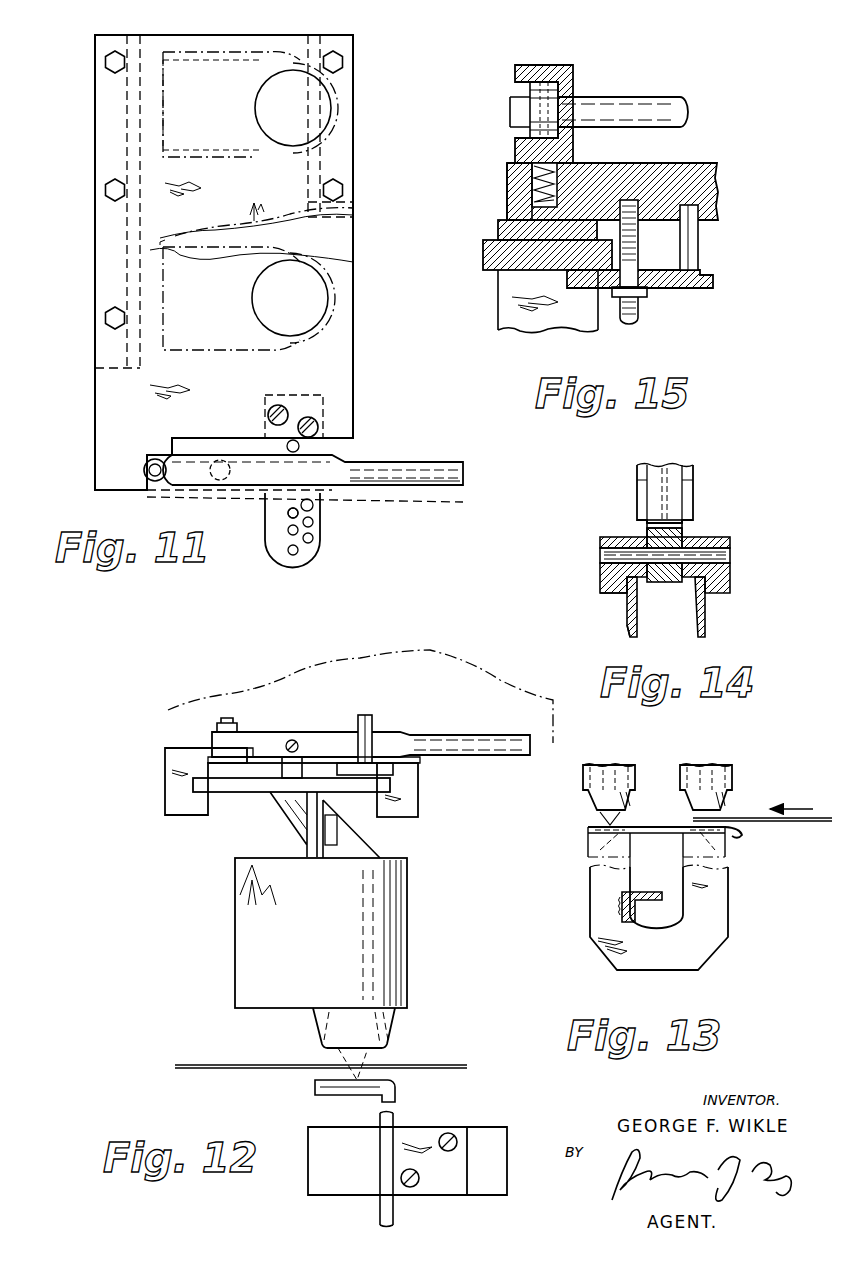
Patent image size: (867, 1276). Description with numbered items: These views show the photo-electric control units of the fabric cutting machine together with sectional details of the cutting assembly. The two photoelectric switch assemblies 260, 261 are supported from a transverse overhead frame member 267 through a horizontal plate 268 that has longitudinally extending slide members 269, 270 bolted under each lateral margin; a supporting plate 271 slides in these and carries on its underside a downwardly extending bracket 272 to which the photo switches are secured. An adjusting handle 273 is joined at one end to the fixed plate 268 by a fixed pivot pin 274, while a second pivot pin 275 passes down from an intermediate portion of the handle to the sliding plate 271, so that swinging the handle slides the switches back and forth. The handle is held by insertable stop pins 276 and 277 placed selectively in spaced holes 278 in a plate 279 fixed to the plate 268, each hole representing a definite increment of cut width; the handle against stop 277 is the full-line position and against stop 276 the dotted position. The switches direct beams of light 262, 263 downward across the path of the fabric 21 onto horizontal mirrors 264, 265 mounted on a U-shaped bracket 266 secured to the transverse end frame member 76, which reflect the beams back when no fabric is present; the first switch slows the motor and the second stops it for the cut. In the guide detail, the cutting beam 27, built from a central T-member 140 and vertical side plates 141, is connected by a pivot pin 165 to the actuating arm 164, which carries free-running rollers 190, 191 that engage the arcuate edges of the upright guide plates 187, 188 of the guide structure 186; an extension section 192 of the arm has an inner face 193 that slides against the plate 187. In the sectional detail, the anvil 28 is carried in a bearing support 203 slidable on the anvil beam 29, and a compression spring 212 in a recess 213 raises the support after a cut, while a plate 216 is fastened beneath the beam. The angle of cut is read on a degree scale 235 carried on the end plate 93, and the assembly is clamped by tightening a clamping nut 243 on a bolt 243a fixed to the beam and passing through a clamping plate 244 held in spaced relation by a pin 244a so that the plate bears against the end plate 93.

In FIG. 12, the fabric 21 is at (219, 1064).
In FIG. 13, the fabric 21 is at (809, 823).
In FIG. 14, the cutting beam 27 is at (642, 525).
In FIG. 15, the anvil 28 is at (626, 106).
In FIG. 15, the anvil beam 29 is at (705, 163).
In FIG. 12, the transverse end frame member 76 is at (480, 1135).
In FIG. 13, the transverse end frame member 76 is at (635, 895).
In FIG. 15, the end plate 93 is at (508, 278).
In FIG. 14, the T-member 140 is at (660, 480).
In FIG. 14, the side plates 141 is at (694, 483).
In FIG. 14, the arm 164 is at (728, 540).
In FIG. 14, the pivot pin 165 is at (732, 556).
In FIG. 14, the guide structure 186 is at (624, 612).
In FIG. 14, the guide plate 187 is at (630, 630).
In FIG. 14, the guide plate 188 is at (706, 608).
In FIG. 14, the roller 190 is at (645, 530).
In FIG. 14, the roller 191 is at (700, 533).
In FIG. 14, the extension section 192 is at (600, 570).
In FIG. 14, the inner face 193 is at (625, 600).
In FIG. 15, the bearing support 203 is at (528, 72).
In FIG. 15, the compression spring 212 is at (540, 170).
In FIG. 15, the recess 213 is at (530, 180).
In FIG. 15, the plate 216 is at (500, 230).
In FIG. 15, the degree scale 235 is at (495, 262).
In FIG. 15, the clamping nut 243 is at (647, 302).
In FIG. 15, the bolt 243a is at (632, 238).
In FIG. 15, the clamping plate 244 is at (700, 289).
In FIG. 15, the pin 244a is at (690, 250).
In FIG. 11, the photoelectric switch assembly 260 is at (337, 92).
In FIG. 13, the photoelectric switch assembly 260 is at (705, 772).
In FIG. 11, the photoelectric switch assembly 261 is at (335, 268).
In FIG. 12, the photoelectric switch assembly 261 is at (380, 937).
In FIG. 13, the photoelectric switch assembly 261 is at (608, 772).
In FIG. 13, the beam of light 262 is at (715, 816).
In FIG. 12, the beam of light 263 is at (370, 1055).
In FIG. 13, the beam of light 263 is at (600, 815).
In FIG. 13, the mirror 264 is at (720, 860).
In FIG. 12, the mirror 265 is at (340, 1088).
In FIG. 13, the mirror 265 is at (590, 845).
In FIG. 12, the U-shaped bracket 266 is at (395, 1118).
In FIG. 13, the U-shaped bracket 266 is at (595, 933).
In FIG. 12, the transverse overhead frame member 267 is at (418, 660).
In FIG. 11, the horizontal plate 268 is at (108, 100).
In FIG. 12, the horizontal plate 268 is at (200, 786).
In FIG. 11, the slide member 269 is at (108, 293).
In FIG. 12, the slide member 269 is at (180, 810).
In FIG. 11, the slide member 270 is at (343, 153).
In FIG. 12, the slide member 270 is at (416, 810).
In FIG. 12, the supporting plate 271 is at (230, 790).
In FIG. 12, the bracket 272 is at (300, 815).
In FIG. 11, the adjusting handle 273 is at (427, 470).
In FIG. 12, the adjusting handle 273 is at (385, 740).
In FIG. 12, the fixed pivot pin 274 is at (228, 722).
In FIG. 12, the pivot pin 275 is at (300, 755).
In FIG. 11, the stop pin 276 is at (313, 506).
In FIG. 12, the stop pin 276 is at (365, 714).
In FIG. 11, the stop pin 277 is at (300, 446).
In FIG. 11, the holes 278 is at (312, 521).
In FIG. 11, the plate 279 is at (308, 552).
In FIG. 12, the plate 279 is at (394, 770).